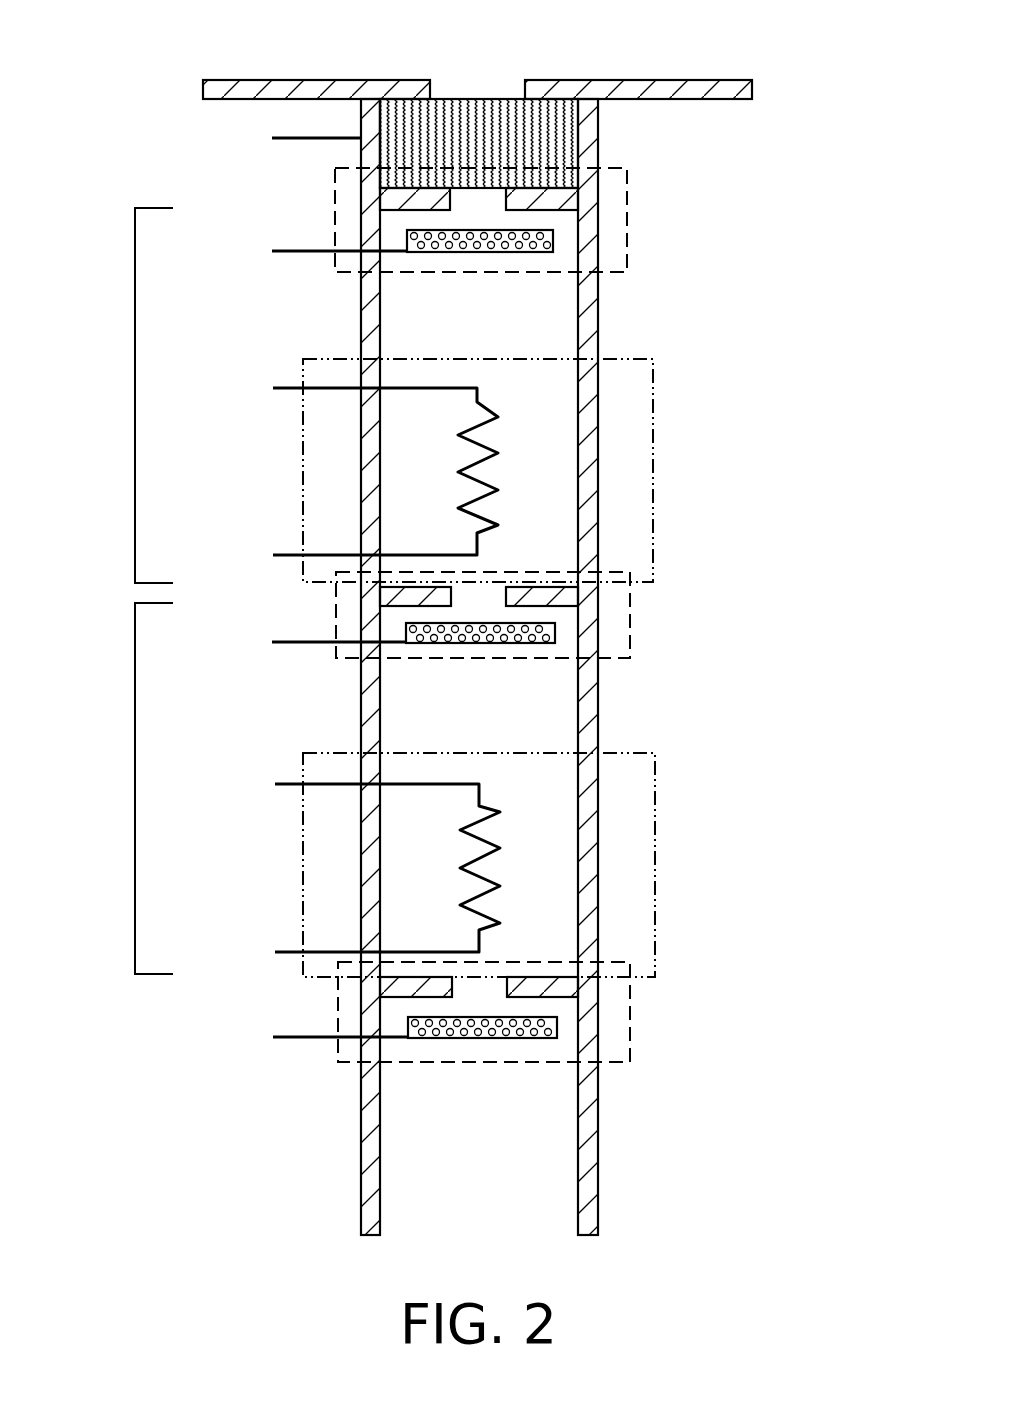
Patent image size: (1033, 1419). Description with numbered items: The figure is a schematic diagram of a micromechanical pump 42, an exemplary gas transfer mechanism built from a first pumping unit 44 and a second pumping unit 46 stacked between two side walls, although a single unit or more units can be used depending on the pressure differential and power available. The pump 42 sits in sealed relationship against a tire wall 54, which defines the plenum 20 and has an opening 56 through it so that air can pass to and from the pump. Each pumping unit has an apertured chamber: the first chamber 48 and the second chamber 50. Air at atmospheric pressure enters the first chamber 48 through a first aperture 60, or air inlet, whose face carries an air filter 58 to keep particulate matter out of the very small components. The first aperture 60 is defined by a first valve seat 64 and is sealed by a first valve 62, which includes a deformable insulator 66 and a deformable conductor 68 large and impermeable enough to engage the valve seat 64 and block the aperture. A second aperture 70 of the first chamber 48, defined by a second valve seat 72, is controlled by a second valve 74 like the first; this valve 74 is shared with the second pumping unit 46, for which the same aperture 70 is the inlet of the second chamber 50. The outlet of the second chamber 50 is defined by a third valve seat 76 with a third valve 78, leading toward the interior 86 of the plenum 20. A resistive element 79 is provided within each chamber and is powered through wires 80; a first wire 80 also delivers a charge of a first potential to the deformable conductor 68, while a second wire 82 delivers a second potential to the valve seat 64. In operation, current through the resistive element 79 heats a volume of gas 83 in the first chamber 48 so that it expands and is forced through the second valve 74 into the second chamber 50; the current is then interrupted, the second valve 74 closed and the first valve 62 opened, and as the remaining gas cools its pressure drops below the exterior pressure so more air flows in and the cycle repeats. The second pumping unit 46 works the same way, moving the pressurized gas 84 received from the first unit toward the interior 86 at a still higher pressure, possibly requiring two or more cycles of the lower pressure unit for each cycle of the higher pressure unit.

The plenum 20 is at (715, 78).
The micromechanical pump 42 is at (740, 307).
The first pumping unit 44 is at (133, 388).
The second pumping unit 46 is at (133, 784).
The first chamber 48 is at (361, 300).
The second chamber 50 is at (600, 697).
The tire wall 54 is at (612, 78).
The opening 56 is at (490, 83).
The air filter 58 is at (580, 117).
The first aperture 60 is at (380, 150).
The first valve 62 is at (335, 190).
The first valve seat 64 is at (558, 212).
The deformable insulator 66 is at (553, 232).
The deformable conductor 68 is at (530, 246).
The second aperture 70 is at (467, 597).
The second valve seat 72 is at (553, 606).
The second valve 74 is at (336, 612).
The third valve seat 76 is at (555, 998).
The third valve 78 is at (338, 1006).
The resistive element 79 is at (497, 450).
The wires 80 is at (288, 252).
The second wire 82 is at (298, 137).
The volume of gas 83 is at (303, 358).
The pressurized gas 84 is at (303, 753).
The interior 86 is at (470, 1170).